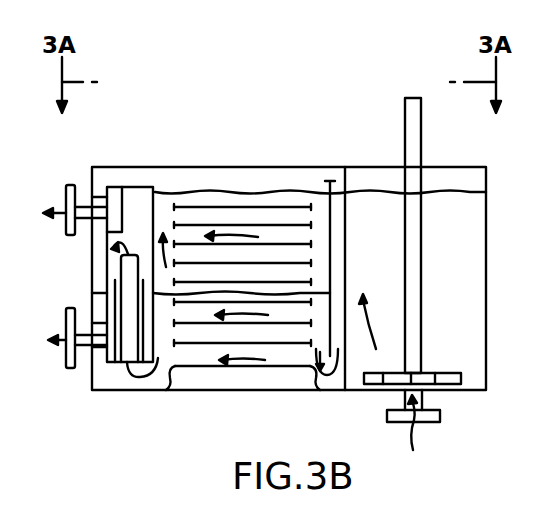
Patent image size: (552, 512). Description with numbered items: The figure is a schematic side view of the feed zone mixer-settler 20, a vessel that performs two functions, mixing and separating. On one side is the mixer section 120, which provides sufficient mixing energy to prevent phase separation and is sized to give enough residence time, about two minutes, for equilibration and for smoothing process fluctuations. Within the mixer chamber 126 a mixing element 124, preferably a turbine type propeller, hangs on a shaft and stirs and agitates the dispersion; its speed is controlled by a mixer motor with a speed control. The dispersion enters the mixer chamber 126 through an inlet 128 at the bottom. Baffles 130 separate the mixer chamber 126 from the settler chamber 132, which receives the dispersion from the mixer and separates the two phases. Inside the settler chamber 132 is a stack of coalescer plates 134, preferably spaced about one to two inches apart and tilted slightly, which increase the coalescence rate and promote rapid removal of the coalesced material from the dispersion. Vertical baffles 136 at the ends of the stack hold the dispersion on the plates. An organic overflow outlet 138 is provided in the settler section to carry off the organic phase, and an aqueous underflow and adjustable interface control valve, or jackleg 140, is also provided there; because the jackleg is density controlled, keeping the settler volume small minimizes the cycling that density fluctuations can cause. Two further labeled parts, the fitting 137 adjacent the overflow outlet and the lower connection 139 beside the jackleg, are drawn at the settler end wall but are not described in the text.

The feed zone mixer-settler 20 is at (440, 156).
The mixer section 120 is at (488, 200).
The mixing element 124 is at (423, 316).
The mixer chamber 126 is at (473, 259).
The inlet 128 is at (397, 423).
The baffles 130 is at (361, 240).
The settler chamber 132 is at (216, 178).
The coalescer plates 134 is at (204, 210).
The vertical baffles 136 is at (173, 205).
The inlet fitting 137 is at (120, 205).
The organic overflow outlet 138 is at (63, 192).
The inlet flange 139 is at (66, 308).
The jackleg 140 is at (107, 268).